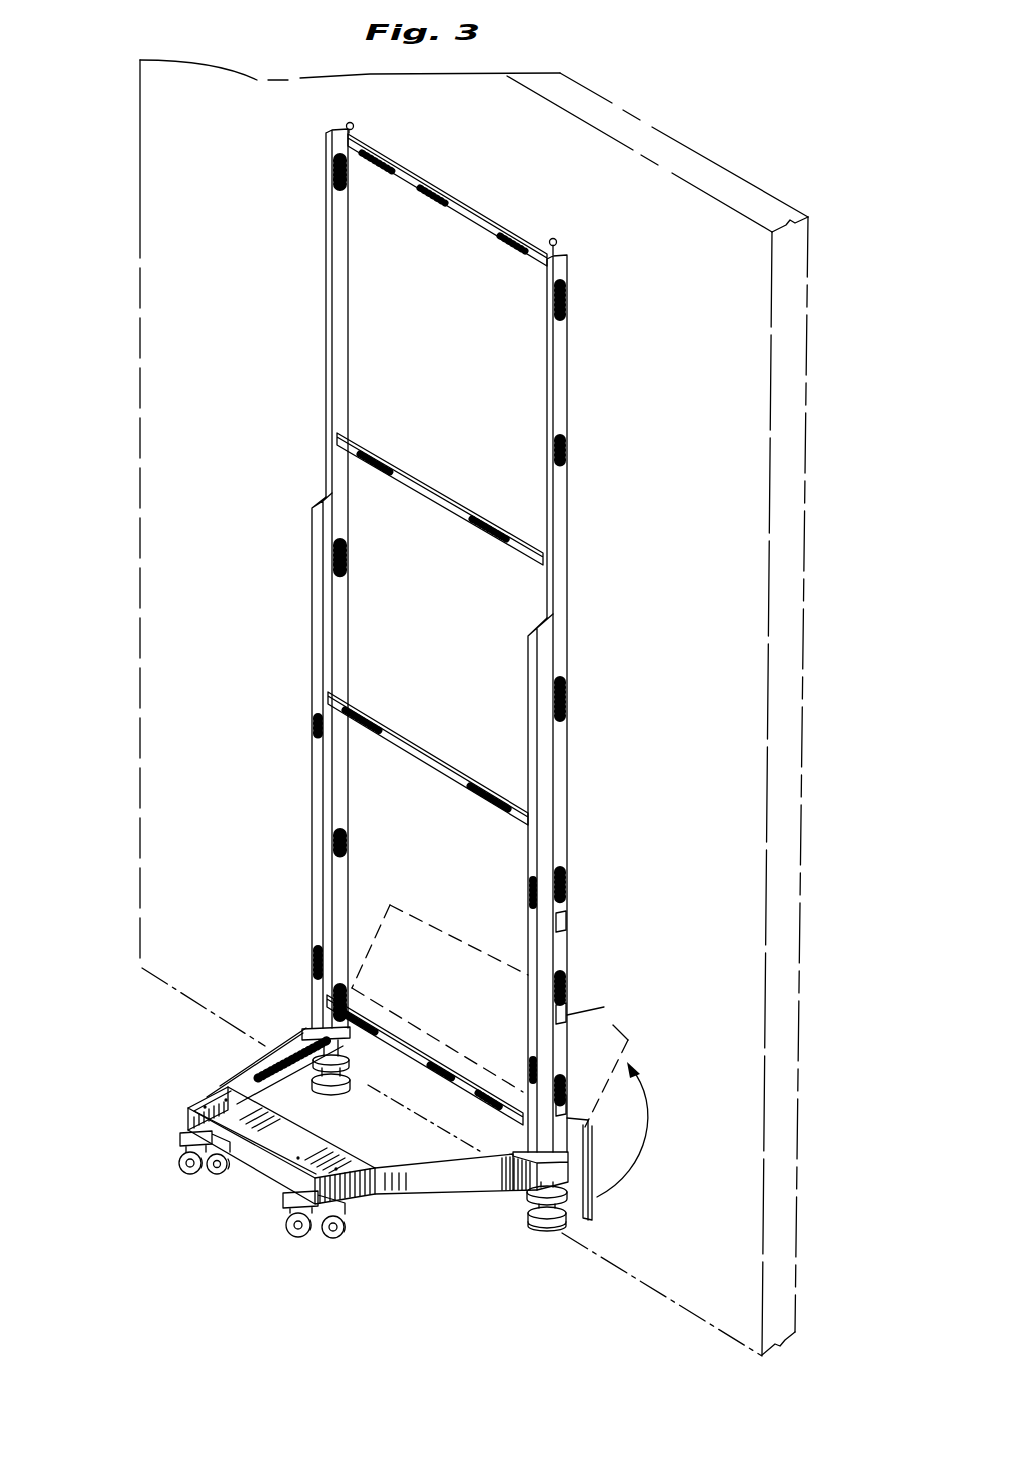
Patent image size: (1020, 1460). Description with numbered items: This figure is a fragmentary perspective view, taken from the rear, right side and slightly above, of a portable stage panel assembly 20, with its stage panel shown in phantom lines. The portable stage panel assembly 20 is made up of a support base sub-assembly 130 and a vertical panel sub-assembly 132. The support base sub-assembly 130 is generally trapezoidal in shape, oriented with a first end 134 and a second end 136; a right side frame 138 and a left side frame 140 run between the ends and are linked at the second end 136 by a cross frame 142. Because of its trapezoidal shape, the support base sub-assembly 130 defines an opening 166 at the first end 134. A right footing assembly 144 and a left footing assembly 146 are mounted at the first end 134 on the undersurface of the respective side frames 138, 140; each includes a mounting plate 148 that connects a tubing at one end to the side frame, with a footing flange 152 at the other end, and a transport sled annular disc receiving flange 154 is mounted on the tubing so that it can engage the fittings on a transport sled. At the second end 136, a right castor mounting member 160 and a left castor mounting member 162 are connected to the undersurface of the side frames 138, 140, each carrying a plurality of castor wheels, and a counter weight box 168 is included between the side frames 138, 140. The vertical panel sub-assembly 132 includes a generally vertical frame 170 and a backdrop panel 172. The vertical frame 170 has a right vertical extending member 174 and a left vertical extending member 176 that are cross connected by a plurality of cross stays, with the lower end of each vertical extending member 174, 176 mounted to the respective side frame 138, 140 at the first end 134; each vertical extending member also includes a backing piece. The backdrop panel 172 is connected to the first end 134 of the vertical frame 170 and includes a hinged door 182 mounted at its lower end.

The portable stage panel assembly 20 is at (114, 264).
The support base sub-assembly 130 is at (420, 1205).
The vertical panel sub-assembly 132 is at (810, 756).
The first end 134 is at (581, 1166).
The second end 136 is at (249, 1186).
The right side frame 138 is at (447, 1198).
The left side frame 140 is at (250, 1085).
The cross frame 142 is at (272, 1184).
The right footing assembly 144 is at (528, 1196).
The left footing assembly 146 is at (344, 1084).
The mounting plate 148 is at (586, 1197).
The footing flange 152 is at (550, 1228).
The transport sled annular disc receiving flange 154 is at (567, 1219).
The right castor mounting member 160 is at (356, 1212).
The left castor mounting member 162 is at (181, 1138).
The opening 166 is at (452, 1103).
The counter weight box 168 is at (222, 1102).
The vertical frame 170 is at (578, 623).
The backdrop panel 172 is at (801, 931).
The right vertical extending member 174 is at (568, 822).
The left vertical extending member 176 is at (349, 585).
The hinged door 182 is at (610, 1022).